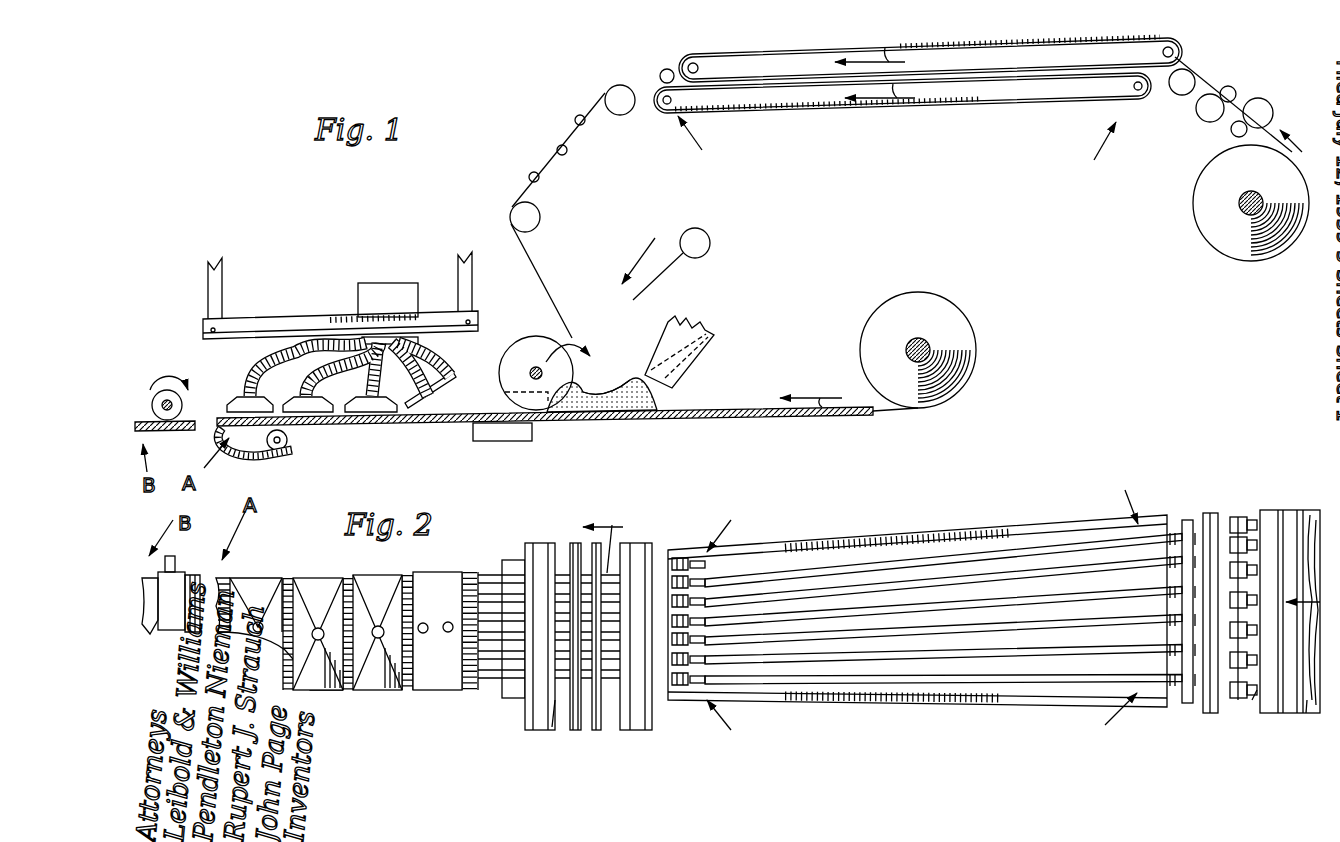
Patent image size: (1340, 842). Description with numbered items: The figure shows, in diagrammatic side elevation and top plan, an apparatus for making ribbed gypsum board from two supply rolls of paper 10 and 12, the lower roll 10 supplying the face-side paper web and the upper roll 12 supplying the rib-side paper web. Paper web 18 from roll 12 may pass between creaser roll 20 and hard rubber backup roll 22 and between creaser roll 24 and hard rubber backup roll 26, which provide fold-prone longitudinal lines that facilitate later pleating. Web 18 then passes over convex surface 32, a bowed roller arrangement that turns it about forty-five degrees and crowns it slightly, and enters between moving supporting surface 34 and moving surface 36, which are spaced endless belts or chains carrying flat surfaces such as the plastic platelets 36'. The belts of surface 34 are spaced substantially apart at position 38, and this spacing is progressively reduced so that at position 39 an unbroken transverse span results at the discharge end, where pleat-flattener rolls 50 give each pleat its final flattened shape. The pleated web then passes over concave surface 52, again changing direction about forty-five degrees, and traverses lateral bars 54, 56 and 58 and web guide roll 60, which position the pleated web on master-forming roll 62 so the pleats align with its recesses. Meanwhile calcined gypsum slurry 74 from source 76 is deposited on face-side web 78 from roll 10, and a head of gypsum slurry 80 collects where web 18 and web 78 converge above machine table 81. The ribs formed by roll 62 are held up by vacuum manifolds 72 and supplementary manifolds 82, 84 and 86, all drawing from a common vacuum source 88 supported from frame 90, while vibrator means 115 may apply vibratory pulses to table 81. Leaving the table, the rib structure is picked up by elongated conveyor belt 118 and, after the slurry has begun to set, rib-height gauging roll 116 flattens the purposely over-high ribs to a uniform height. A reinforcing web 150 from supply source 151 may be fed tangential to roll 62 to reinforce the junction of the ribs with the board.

In FIG. 1, the supply roll of paper 10 is at (976, 375).
In FIG. 1, the supply roll of paper 12 is at (1186, 208).
In FIG. 2, the supply roll of paper 12 is at (1299, 720).
In FIG. 1, the paper web 18 is at (1283, 141).
In FIG. 2, the paper web 18 is at (1307, 715).
In FIG. 1, the creaser roll 20 is at (1231, 131).
In FIG. 2, the creaser roll 20 is at (1256, 700).
In FIG. 1, the hard rubber backup roll 22 is at (1260, 98).
In FIG. 1, the creaser roll 24 is at (1230, 86).
In FIG. 2, the creaser roll 24 is at (1232, 540).
In FIG. 1, the hard rubber backup roll 26 is at (1196, 110).
In FIG. 2, the hard rubber backup roll 26 is at (1215, 708).
In FIG. 1, the convex surface 32 is at (1191, 71).
In FIG. 1, the supporting surface 34 is at (990, 98).
In FIG. 2, the supporting surface 34 is at (1035, 580).
In FIG. 1, the moving surface 36 is at (930, 59).
In FIG. 2, the moving surface 36 is at (925, 613).
In FIG. 2, the plastic platelets 36' is at (1175, 612).
In FIG. 1, the position of substantial spacing 38 is at (1098, 152).
In FIG. 2, the position of substantial spacing 38 is at (1112, 606).
In FIG. 1, the position of no spacing 39 is at (700, 141).
In FIG. 2, the position of no spacing 39 is at (730, 627).
In FIG. 1, the pleat-flattener rolls 50 is at (660, 74).
In FIG. 2, the pleat-flattener rolls 50 is at (693, 561).
In FIG. 1, the concave surface 52 is at (618, 116).
In FIG. 2, the concave surface 52 is at (634, 723).
In FIG. 1, the lateral bar 54 is at (575, 120).
In FIG. 2, the lateral bar 54 is at (601, 727).
In FIG. 1, the lateral bar 56 is at (557, 150).
In FIG. 2, the lateral bar 56 is at (578, 727).
In FIG. 1, the lateral bar 58 is at (529, 177).
In FIG. 2, the lateral bar 58 is at (552, 727).
In FIG. 1, the web guide roll 60 is at (539, 216).
In FIG. 2, the web guide roll 60 is at (522, 713).
In FIG. 1, the master-forming roll 62 is at (508, 346).
In FIG. 2, the master-forming roll 62 is at (510, 560).
In FIG. 1, the vacuum manifolds 72 is at (448, 398).
In FIG. 2, the vacuum manifolds 72 is at (476, 665).
In FIG. 1, the calcined gypsum slurry 74 is at (664, 398).
In FIG. 1, the slurry source 76 is at (712, 353).
In FIG. 1, the face-side web 78 is at (895, 412).
In FIG. 1, the head of gypsum slurry 80 is at (584, 391).
In FIG. 1, the machine table 81 is at (558, 420).
In FIG. 1, the supplementary vacuum manifold 82 is at (370, 410).
In FIG. 2, the supplementary vacuum manifold 82 is at (380, 668).
In FIG. 1, the supplementary vacuum manifold 84 is at (301, 400).
In FIG. 2, the supplementary vacuum manifold 84 is at (322, 583).
In FIG. 1, the supplementary vacuum manifold 86 is at (246, 398).
In FIG. 2, the supplementary vacuum manifold 86 is at (258, 585).
In FIG. 1, the common vacuum source 88 is at (375, 285).
In FIG. 1, the frame 90 is at (220, 302).
In FIG. 1, the vibrator means 115 is at (495, 441).
In FIG. 1, the rib-height gauging roll 116 is at (161, 390).
In FIG. 2, the rib-height gauging roll 116 is at (186, 566).
In FIG. 1, the elongated conveyor belt 118 is at (288, 446).
In FIG. 1, the reinforcing web 150 is at (680, 280).
In FIG. 1, the supply source 151 is at (710, 244).